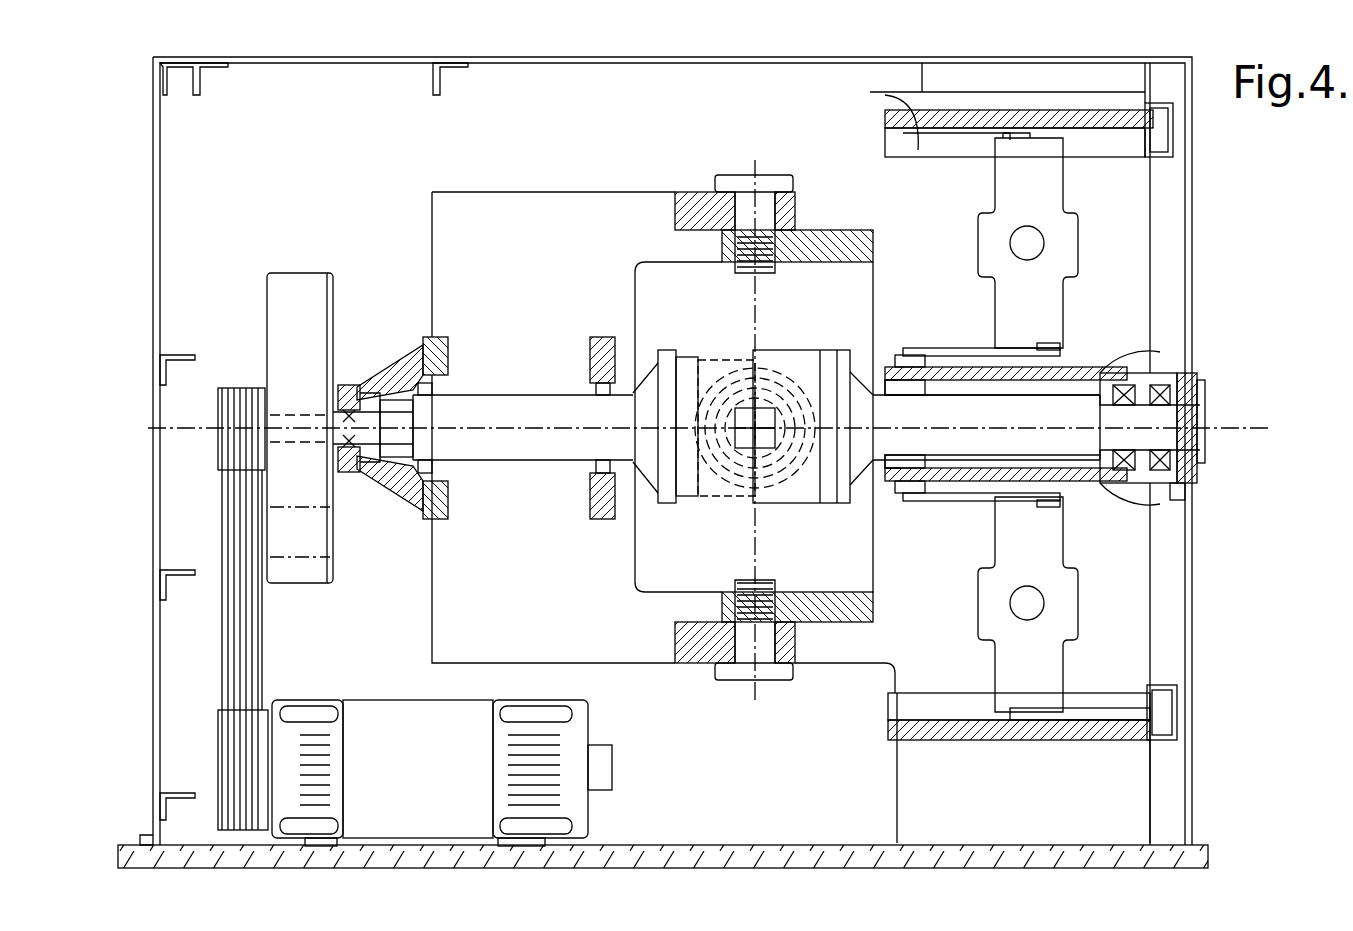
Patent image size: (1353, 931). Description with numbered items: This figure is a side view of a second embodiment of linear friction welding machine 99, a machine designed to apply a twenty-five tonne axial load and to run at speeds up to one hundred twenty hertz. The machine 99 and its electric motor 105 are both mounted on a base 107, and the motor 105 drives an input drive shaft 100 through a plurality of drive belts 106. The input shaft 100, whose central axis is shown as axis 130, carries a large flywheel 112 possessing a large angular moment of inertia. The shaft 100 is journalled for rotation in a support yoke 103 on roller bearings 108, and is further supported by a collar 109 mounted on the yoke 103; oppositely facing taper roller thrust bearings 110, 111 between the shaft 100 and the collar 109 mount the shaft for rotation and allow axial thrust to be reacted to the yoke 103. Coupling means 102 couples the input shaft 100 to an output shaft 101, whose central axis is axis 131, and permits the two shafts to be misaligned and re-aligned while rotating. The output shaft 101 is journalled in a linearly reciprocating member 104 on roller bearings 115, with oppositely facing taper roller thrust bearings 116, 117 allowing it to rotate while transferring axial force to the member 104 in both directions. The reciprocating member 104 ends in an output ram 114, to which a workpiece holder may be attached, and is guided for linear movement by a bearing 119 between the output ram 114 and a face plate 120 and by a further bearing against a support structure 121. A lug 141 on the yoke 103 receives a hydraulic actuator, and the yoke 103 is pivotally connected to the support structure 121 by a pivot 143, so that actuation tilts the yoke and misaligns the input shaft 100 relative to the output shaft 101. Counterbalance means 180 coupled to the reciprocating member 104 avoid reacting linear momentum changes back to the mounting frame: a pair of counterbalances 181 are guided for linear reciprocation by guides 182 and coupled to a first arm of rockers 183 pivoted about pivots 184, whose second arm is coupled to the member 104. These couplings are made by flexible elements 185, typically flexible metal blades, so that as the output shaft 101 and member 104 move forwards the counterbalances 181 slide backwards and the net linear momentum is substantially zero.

The linear friction welding machine 99 is at (408, 222).
The input drive shaft 100 is at (535, 402).
The output shaft 101 is at (988, 440).
The coupling means 102 is at (728, 505).
The support yoke 103 is at (566, 268).
The linearly reciprocating member 104 is at (1150, 330).
The electric motor 105 is at (455, 772).
The drive belts 106 is at (252, 668).
The base 107 is at (746, 848).
The roller bearings 108 is at (432, 455).
The collar 109 is at (385, 376).
The taper roller thrust bearing 110 is at (398, 470).
The taper roller thrust bearing 111 is at (350, 462).
The flywheel 112 is at (318, 572).
The output ram 114 is at (1175, 450).
The roller bearings 115 is at (880, 392).
The taper roller thrust bearing 116 is at (1165, 370).
The taper roller thrust bearing 117 is at (1172, 400).
The bearing 119 is at (1180, 485).
The face plate 120 is at (1172, 638).
The support structure 121 is at (858, 612).
The central axis 130 is at (567, 428).
The central axis 131 is at (962, 432).
The lug 141 is at (765, 180).
The pivot 143 is at (745, 652).
The counterbalance means 180 is at (1098, 600).
The counterbalances 181 is at (920, 108).
The guides 182 is at (893, 125).
The rockers 183 is at (1040, 187).
The pivots 184 is at (1033, 243).
The flexible elements 185 is at (903, 215).